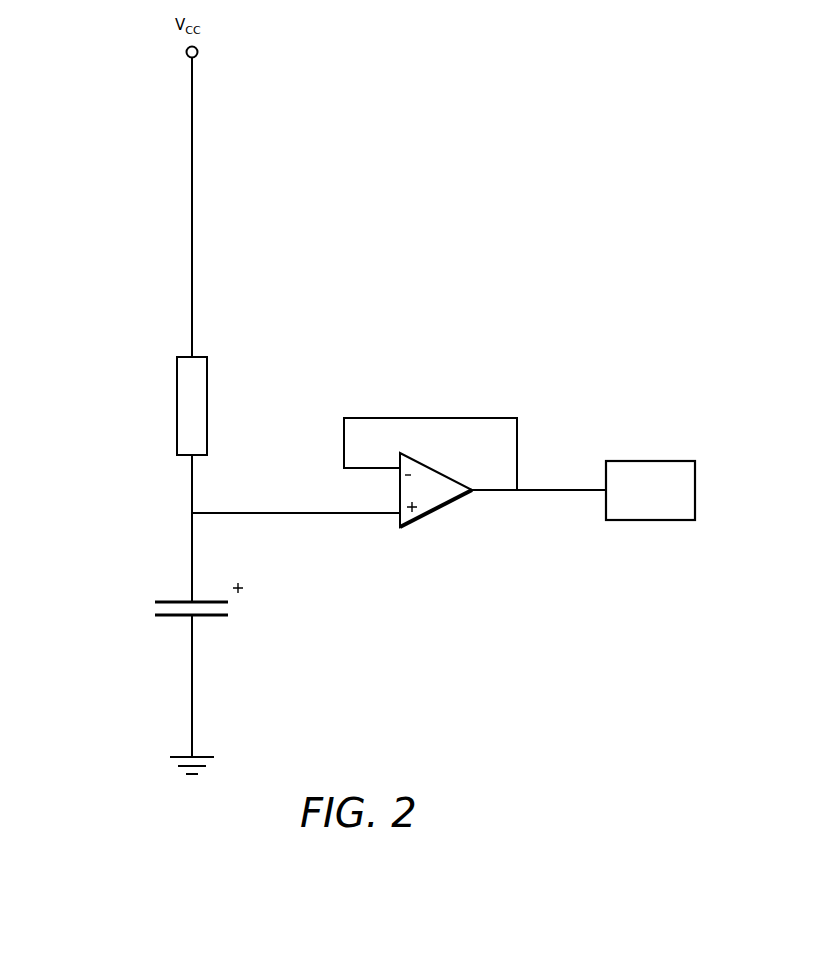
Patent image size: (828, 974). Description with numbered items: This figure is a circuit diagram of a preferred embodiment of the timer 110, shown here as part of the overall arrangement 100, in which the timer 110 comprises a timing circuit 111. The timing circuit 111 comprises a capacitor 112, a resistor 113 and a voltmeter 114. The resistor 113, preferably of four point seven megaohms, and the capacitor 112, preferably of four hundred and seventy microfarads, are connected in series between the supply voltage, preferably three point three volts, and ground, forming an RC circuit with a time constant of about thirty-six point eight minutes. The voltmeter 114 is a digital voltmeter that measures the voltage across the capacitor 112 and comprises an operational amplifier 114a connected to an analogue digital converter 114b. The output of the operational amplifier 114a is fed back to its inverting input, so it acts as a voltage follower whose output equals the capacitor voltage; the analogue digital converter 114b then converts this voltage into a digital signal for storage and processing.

The system 100 is at (486, 681).
The timer 110 is at (115, 86).
The timing circuit 111 is at (115, 206).
The capacitor 112 is at (153, 607).
The resistor 113 is at (177, 370).
The voltmeter 114 is at (519, 510).
The operational amplifier 114a is at (421, 528).
The analogue digital converter 114b is at (660, 521).